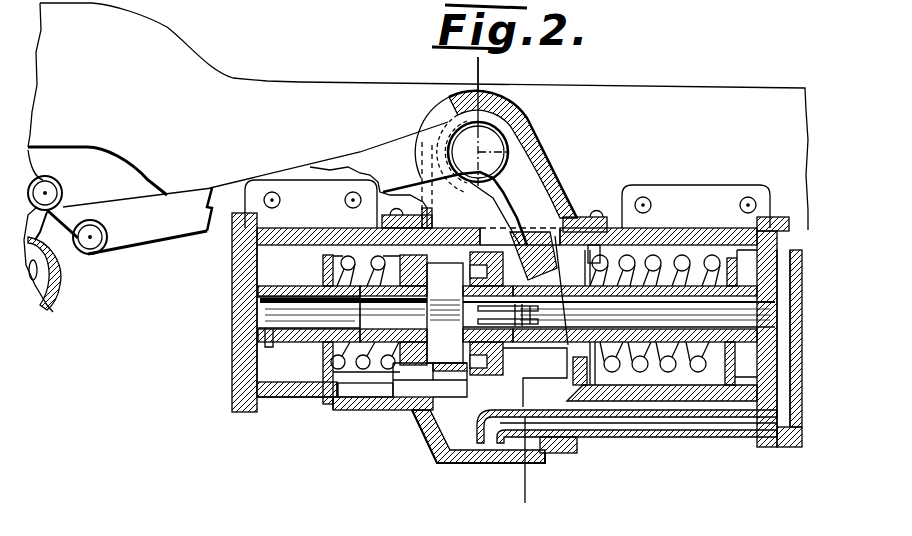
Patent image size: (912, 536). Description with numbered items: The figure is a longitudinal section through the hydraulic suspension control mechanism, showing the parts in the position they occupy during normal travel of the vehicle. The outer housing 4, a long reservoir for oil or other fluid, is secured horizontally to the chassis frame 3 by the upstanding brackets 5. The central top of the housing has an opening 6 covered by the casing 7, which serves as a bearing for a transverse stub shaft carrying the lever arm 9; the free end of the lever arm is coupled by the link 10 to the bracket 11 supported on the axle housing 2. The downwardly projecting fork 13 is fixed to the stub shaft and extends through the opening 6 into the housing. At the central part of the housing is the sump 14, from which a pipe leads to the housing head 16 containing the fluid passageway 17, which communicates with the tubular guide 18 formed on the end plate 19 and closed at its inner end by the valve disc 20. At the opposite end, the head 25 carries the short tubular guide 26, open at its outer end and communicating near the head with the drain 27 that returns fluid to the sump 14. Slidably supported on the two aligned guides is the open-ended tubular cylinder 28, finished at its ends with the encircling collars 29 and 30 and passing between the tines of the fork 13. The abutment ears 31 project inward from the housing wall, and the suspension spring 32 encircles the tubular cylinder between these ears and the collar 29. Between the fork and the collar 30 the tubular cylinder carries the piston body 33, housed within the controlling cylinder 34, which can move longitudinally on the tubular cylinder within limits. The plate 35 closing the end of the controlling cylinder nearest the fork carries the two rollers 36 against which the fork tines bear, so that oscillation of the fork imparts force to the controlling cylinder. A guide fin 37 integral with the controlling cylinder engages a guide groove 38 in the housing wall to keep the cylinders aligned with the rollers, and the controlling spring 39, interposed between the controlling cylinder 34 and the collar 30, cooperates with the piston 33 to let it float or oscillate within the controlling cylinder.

The axle housing 2 is at (55, 312).
The chassis frame 3 is at (677, 97).
The outer housing 4 is at (300, 400).
The upstanding brackets 5 is at (698, 193).
The opening 6 is at (490, 72).
The casing 7 is at (520, 117).
The lever arm 9 is at (182, 207).
The link 10 is at (72, 212).
The bracket 11 is at (48, 165).
The fork 13 is at (528, 198).
The sump 14 is at (437, 452).
The housing head 16 is at (796, 448).
The fluid passageway 17 is at (787, 405).
The tubular guide 18 is at (748, 385).
The end plate 19 is at (762, 259).
The valve disc 20 is at (548, 210).
The head 25 is at (250, 365).
The short tubular guide 26 is at (280, 283).
The drain 27 is at (263, 328).
The tubular cylinder 28 is at (627, 372).
The collar 29 is at (735, 385).
The collar 30 is at (320, 410).
The abutment ears 31 is at (600, 233).
The suspension spring 32 is at (663, 372).
The piston body 33 is at (420, 400).
The controlling cylinder 34 is at (425, 397).
The plate 35 is at (435, 372).
The rollers 36 is at (532, 350).
The guide fin 37 is at (417, 413).
The guide groove 38 is at (350, 410).
The controlling spring 39 is at (327, 262).